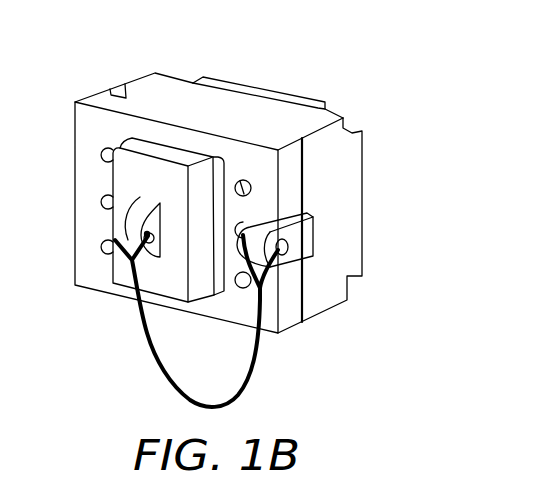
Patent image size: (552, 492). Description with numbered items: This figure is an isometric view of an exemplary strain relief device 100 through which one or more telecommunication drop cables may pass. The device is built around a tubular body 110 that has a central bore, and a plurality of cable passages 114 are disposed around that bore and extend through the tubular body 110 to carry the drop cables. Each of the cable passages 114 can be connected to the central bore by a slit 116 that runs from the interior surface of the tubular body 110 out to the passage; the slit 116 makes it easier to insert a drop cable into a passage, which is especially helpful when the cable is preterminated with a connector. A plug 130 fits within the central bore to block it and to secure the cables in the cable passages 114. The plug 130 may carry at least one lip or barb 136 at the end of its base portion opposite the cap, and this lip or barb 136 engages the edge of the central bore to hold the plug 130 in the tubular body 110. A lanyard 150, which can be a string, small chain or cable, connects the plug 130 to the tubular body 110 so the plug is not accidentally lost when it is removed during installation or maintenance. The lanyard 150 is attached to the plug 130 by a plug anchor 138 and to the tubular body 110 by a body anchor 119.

The strain relief device 100 is at (300, 46).
The tubular body 110 is at (365, 195).
The cable passages 114 is at (100, 158).
The slit 116 is at (240, 181).
The body anchor 119 is at (302, 236).
The plug 130 is at (116, 287).
The lip or barb 136 is at (225, 160).
The plug anchor 138 is at (128, 225).
The lanyard 150 is at (260, 370).